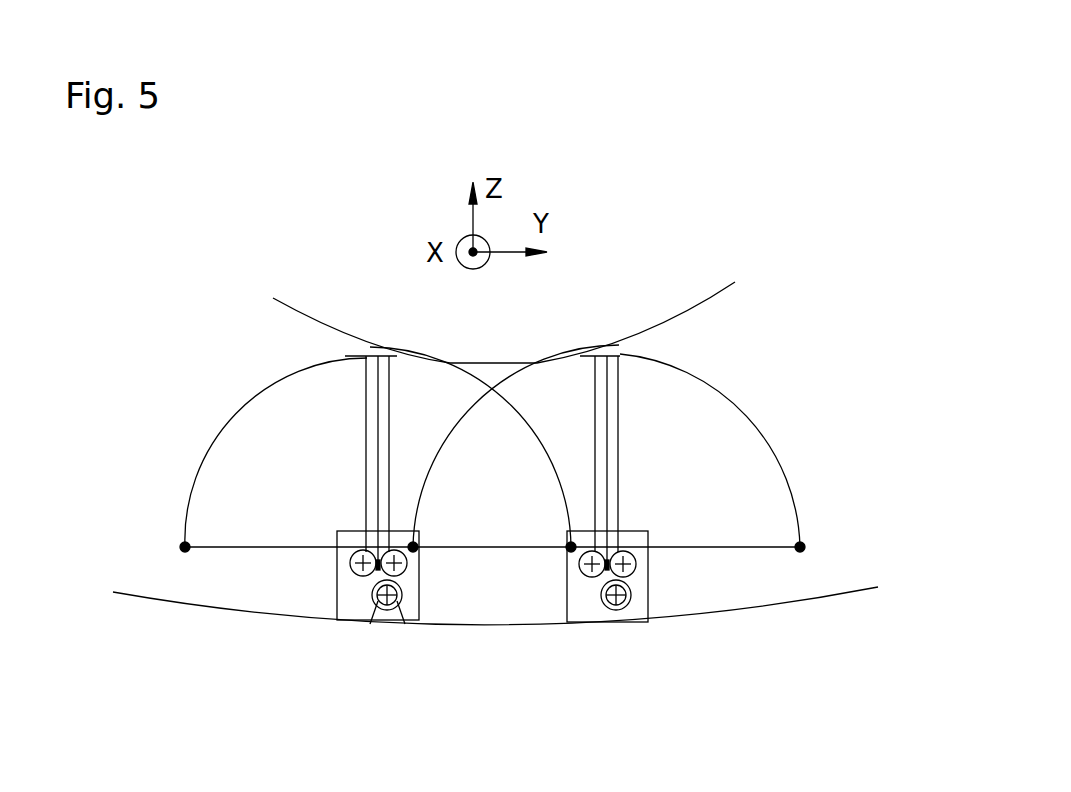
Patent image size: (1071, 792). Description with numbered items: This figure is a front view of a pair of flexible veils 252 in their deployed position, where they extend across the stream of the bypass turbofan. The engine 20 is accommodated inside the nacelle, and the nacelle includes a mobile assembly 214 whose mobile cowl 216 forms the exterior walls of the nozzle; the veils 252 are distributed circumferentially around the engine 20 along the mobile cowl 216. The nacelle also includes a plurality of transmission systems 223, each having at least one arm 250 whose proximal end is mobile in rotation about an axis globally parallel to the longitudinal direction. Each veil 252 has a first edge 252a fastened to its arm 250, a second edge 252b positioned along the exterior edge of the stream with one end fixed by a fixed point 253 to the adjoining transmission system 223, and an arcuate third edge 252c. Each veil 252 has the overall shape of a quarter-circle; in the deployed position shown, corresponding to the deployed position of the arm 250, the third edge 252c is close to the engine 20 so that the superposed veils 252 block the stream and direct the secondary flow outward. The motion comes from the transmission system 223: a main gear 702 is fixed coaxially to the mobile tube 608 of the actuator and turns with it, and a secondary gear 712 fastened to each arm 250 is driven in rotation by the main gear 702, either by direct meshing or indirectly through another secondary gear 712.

The engine 20 is at (720, 293).
The mobile assembly 214 is at (797, 218).
The mobile cowl 216 is at (840, 595).
The transmission system 223 is at (647, 613).
The arm 250 is at (591, 406).
The flexible veil 252 is at (465, 488).
The first edge 252a is at (367, 393).
The second edge 252b is at (258, 547).
The third edge 252c is at (292, 373).
The fixed point 253 is at (185, 545).
The mobile tube 608 is at (382, 605).
The main gear 702 is at (387, 607).
The secondary gear 712 is at (353, 570).